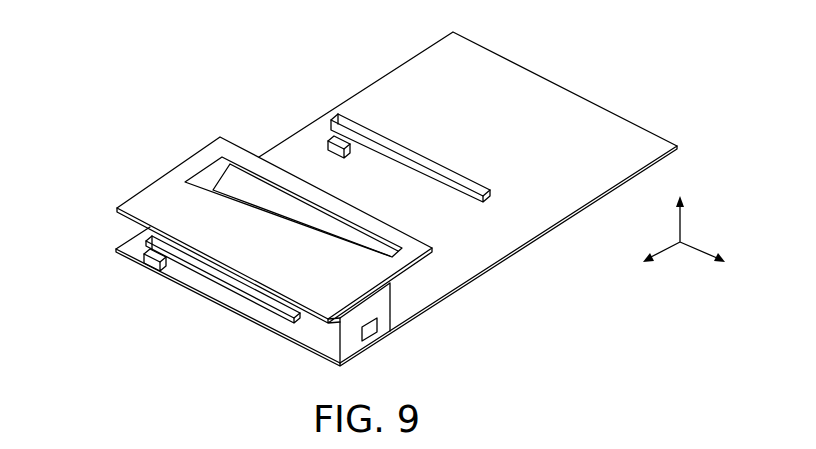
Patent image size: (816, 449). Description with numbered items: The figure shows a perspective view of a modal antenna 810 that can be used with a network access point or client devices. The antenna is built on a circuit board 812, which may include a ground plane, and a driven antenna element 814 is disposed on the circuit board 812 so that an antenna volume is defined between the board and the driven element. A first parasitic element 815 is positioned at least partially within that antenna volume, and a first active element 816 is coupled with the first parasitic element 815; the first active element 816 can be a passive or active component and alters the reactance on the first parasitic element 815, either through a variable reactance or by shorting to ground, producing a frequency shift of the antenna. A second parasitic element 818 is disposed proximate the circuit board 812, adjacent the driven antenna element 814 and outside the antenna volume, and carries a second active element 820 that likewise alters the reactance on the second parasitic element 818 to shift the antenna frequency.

The modal antenna 810 is at (145, 70).
The circuit board 812 is at (373, 83).
The driven antenna element 814 is at (168, 173).
The first parasitic element 815 is at (257, 299).
The first active element 816 is at (145, 259).
The second parasitic element 818 is at (437, 160).
The second active element 820 is at (351, 158).